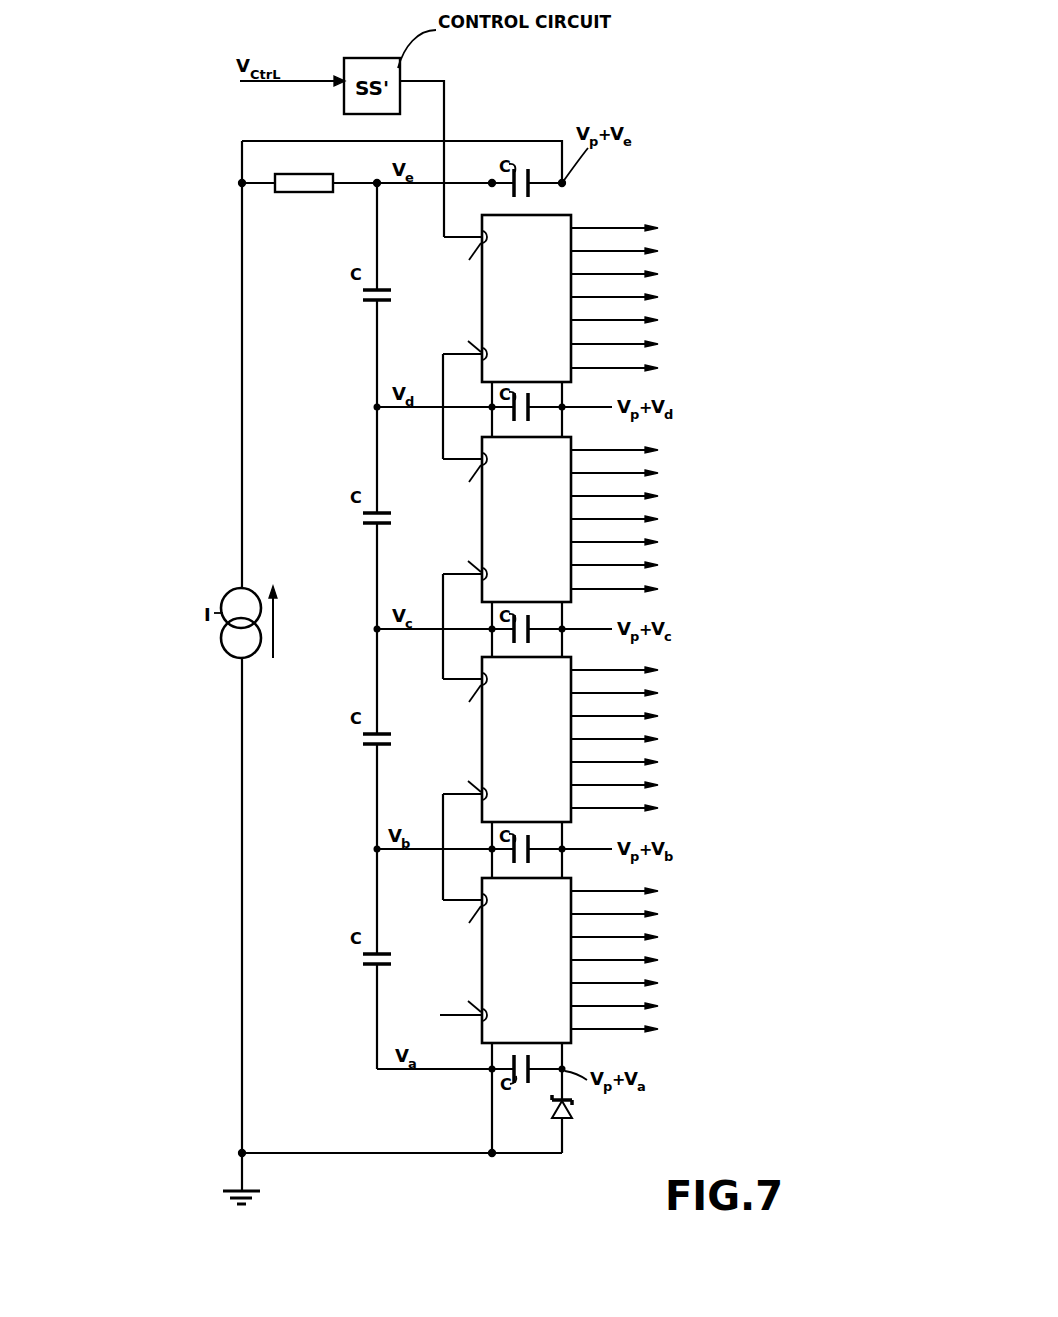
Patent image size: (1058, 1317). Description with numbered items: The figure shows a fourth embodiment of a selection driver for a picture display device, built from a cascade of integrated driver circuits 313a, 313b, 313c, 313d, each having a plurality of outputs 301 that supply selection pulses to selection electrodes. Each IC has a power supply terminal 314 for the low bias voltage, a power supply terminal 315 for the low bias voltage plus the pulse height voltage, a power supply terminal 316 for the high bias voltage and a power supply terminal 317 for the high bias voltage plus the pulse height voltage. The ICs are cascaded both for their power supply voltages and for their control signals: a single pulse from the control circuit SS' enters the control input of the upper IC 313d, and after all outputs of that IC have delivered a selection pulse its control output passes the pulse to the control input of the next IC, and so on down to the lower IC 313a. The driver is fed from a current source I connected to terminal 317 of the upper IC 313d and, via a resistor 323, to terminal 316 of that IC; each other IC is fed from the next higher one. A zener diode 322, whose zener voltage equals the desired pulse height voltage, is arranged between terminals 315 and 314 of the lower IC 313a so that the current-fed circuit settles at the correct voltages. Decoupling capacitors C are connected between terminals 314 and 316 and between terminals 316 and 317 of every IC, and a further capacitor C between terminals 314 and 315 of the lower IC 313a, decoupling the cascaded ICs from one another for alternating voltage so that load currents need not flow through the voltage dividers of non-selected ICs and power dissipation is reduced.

The outputs 301 is at (636, 206).
The integrated driver circuit 313a is at (505, 961).
The integrated driver circuit 313b is at (505, 740).
The integrated driver circuit 313c is at (505, 520).
The integrated driver circuit 313d is at (505, 298).
The power supply terminal 314 is at (469, 685).
The power supply terminal 315 is at (571, 382).
The power supply terminal 316 is at (471, 578).
The power supply terminal 317 is at (571, 215).
The zener diode 322 is at (574, 1115).
The resistor 323 is at (300, 192).